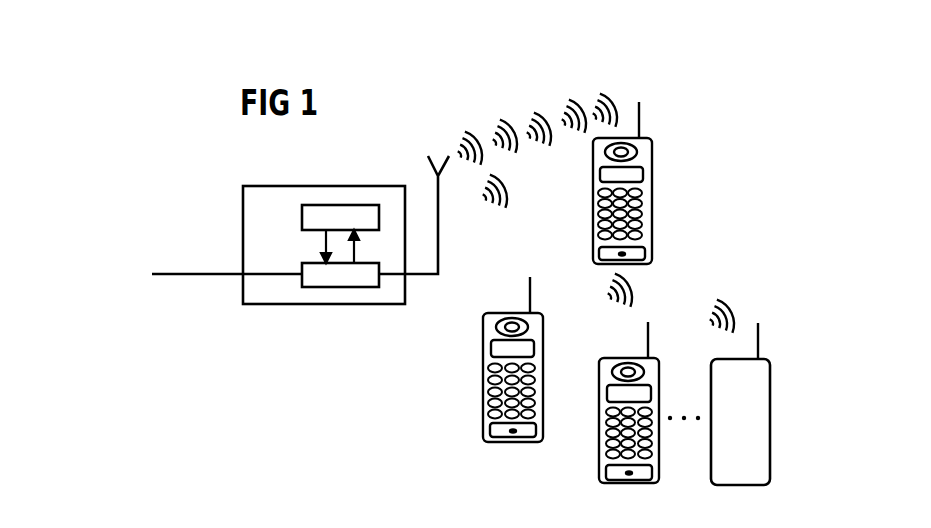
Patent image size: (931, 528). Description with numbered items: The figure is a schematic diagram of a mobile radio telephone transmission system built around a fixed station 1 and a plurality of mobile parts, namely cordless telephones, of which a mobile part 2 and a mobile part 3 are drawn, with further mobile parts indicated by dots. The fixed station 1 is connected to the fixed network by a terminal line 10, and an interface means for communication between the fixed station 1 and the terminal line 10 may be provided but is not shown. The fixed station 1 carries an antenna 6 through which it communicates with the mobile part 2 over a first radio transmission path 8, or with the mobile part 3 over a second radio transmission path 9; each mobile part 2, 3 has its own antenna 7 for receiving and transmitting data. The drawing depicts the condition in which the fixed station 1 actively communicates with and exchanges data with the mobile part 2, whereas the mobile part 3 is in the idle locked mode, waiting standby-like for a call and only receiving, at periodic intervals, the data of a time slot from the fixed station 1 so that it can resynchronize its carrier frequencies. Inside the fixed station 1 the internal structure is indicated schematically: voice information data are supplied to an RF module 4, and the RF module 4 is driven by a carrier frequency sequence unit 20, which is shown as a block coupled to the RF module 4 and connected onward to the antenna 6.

The fixed station 1 is at (277, 304).
The mobile part 2 is at (698, 163).
The mobile part 3 is at (600, 470).
The RF module 4 is at (347, 290).
The antenna 6 is at (435, 157).
The antenna 7 is at (665, 100).
The first radio transmission path 8 is at (531, 117).
The second radio transmission path 9 is at (634, 292).
The terminal line 10 is at (180, 274).
The carrier frequency sequence unit 20 is at (348, 205).